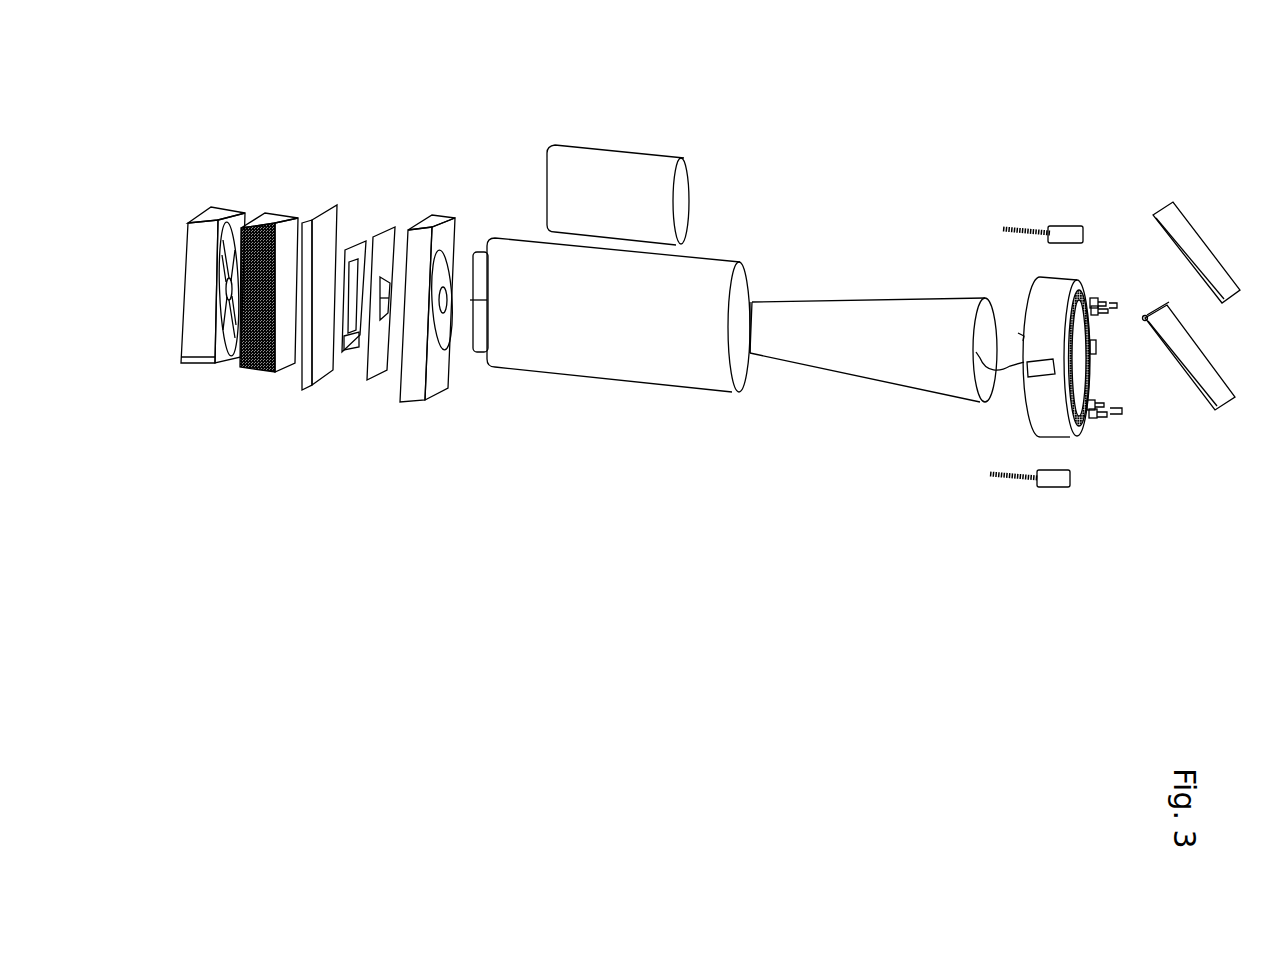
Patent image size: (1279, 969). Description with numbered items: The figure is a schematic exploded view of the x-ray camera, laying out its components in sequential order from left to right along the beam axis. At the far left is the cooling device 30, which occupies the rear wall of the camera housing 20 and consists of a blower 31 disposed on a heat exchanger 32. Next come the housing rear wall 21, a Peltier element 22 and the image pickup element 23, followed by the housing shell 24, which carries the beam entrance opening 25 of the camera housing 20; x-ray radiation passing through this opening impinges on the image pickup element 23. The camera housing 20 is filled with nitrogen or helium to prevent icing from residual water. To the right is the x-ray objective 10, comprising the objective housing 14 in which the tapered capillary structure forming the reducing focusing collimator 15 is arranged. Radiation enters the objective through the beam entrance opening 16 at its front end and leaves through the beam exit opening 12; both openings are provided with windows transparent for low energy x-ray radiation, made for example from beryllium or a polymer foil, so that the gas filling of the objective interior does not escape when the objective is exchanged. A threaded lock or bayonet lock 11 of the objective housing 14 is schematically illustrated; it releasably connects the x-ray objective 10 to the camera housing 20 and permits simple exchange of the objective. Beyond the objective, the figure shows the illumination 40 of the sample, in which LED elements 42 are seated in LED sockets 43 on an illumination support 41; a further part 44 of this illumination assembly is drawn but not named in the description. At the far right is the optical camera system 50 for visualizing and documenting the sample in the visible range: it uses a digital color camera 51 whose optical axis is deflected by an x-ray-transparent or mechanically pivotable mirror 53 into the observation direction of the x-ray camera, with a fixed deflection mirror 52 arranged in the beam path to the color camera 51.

The x-ray objective 10 is at (703, 452).
The threaded lock or bayonet lock 11 is at (477, 313).
The beam exit opening 12 is at (472, 287).
The objective housing 14 is at (647, 338).
The collimator 15 is at (835, 335).
The beam entrance opening 16 is at (740, 332).
The camera housing 20 is at (383, 448).
The housing rear wall 21 is at (318, 367).
The Peltier element 22 is at (354, 305).
The image pickup element 23 is at (390, 332).
The housing shell 24 is at (413, 375).
The beam entrance opening 25 is at (446, 305).
The cooling device 30 is at (230, 452).
The blower 31 is at (197, 340).
The heat exchanger 32 is at (262, 372).
The illumination 40 is at (1052, 530).
The illumination support 41 is at (1042, 402).
The LED elements 42 is at (1118, 413).
The LED sockets 43 is at (1087, 423).
The connector 44 is at (1041, 481).
The optical camera system 50 is at (1205, 557).
The digital color camera 51 is at (592, 192).
The fixed deflection mirror 52 is at (1185, 242).
The mirror 53 is at (1203, 370).